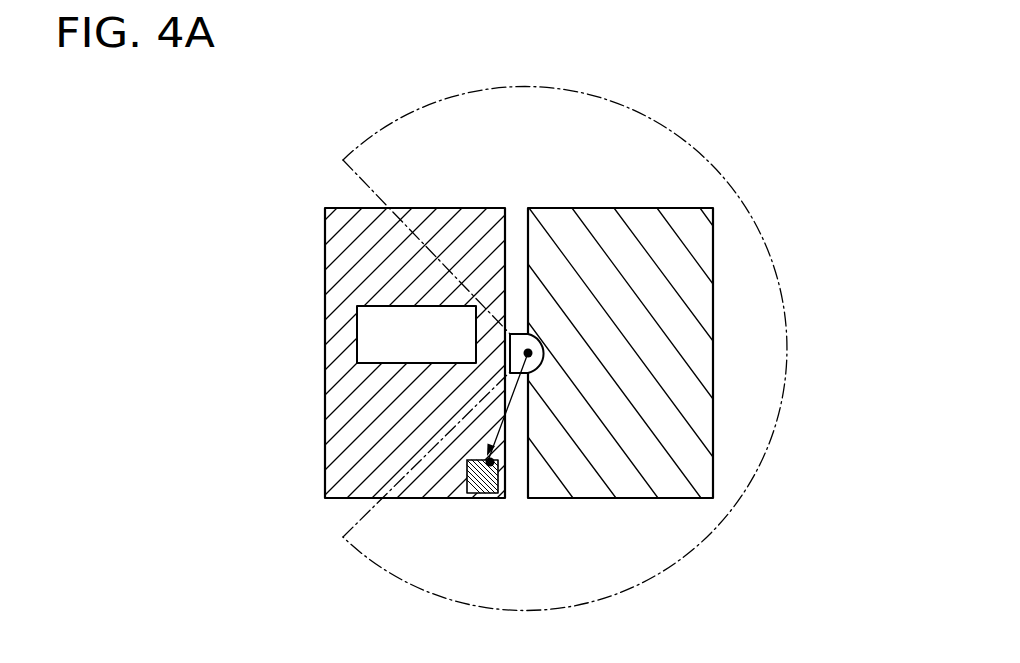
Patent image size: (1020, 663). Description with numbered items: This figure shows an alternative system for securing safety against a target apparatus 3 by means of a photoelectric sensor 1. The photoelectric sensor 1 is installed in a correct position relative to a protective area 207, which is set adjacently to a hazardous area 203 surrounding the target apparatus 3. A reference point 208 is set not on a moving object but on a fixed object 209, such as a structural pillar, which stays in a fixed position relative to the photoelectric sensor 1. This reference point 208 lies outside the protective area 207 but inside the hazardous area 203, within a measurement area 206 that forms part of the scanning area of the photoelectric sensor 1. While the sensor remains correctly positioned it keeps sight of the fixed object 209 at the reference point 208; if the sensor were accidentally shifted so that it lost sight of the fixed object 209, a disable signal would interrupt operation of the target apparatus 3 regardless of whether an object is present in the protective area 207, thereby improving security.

The photoelectric sensor 1 is at (548, 352).
The target apparatus 3 is at (357, 342).
The hazardous area 203 is at (325, 296).
The measurement area 206 is at (692, 545).
The protective area 207 is at (677, 208).
The reference point 208 is at (490, 461).
The fixed object 209 is at (487, 494).